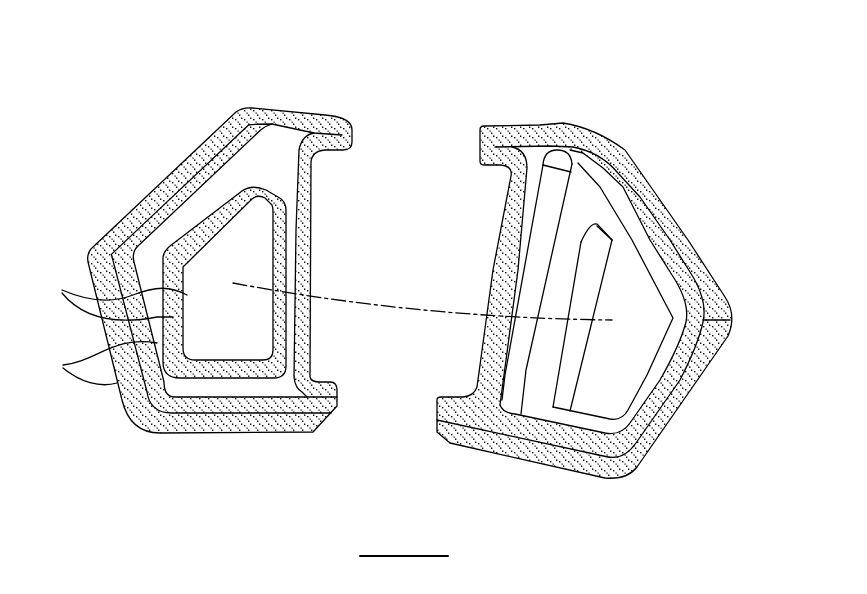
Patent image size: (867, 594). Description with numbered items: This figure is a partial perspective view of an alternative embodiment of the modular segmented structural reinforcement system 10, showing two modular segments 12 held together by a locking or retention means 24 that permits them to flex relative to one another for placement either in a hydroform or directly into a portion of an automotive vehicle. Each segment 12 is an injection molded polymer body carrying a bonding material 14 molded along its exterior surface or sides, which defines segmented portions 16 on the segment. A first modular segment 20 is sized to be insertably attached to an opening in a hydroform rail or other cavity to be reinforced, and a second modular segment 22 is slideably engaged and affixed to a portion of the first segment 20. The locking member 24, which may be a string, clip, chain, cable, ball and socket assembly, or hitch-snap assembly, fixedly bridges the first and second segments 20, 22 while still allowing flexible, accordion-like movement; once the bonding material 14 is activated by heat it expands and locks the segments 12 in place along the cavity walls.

The modular segmented structural reinforcement system 10 is at (741, 109).
The segment 12 is at (280, 163).
The bonding material 14 is at (181, 174).
The segmented portion 16 is at (114, 331).
The first modular segment 20 is at (443, 80).
The second modular segment 22 is at (363, 80).
The locking member 24 is at (382, 317).